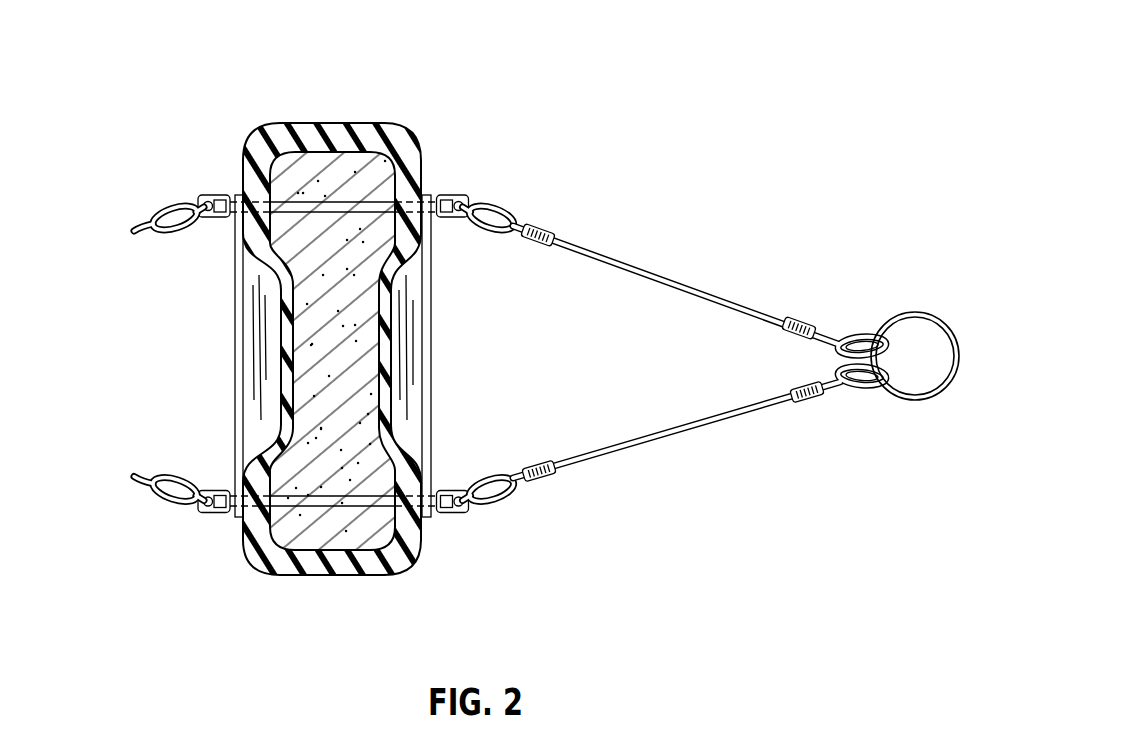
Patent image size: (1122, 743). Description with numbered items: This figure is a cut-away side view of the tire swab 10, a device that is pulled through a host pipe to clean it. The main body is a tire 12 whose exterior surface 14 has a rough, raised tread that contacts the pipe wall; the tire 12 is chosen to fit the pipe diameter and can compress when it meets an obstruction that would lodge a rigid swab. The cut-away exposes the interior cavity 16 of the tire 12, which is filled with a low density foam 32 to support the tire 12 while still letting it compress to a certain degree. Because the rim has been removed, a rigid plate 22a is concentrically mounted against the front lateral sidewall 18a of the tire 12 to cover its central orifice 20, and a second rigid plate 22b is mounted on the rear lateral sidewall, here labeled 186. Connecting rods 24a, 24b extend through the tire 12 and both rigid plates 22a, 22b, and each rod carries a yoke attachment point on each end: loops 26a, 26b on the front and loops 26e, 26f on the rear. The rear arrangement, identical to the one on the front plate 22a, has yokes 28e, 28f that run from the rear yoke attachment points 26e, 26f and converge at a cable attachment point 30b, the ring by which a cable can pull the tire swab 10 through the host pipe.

The tire swab 10 is at (460, 75).
The tire 12 is at (255, 130).
The exterior surface 14 is at (328, 573).
The interior cavity 16 is at (341, 174).
The front lateral sidewall 18a is at (253, 552).
The lower corner portion 186 is at (413, 547).
The central orifice 20 is at (325, 327).
The rigid plate 22a is at (233, 350).
The second rigid plate 22b is at (433, 363).
The connecting rod 24a is at (345, 508).
The connecting rod 24b is at (367, 200).
The yoke attachment point 26a is at (207, 490).
The yoke attachment point 26b is at (205, 217).
The yoke attachment point 26e is at (450, 490).
The yoke attachment point 26f is at (450, 217).
The yoke 28e is at (653, 438).
The yoke 28f is at (688, 287).
The cable attachment point 30b is at (908, 396).
The low density foam 32 is at (281, 178).